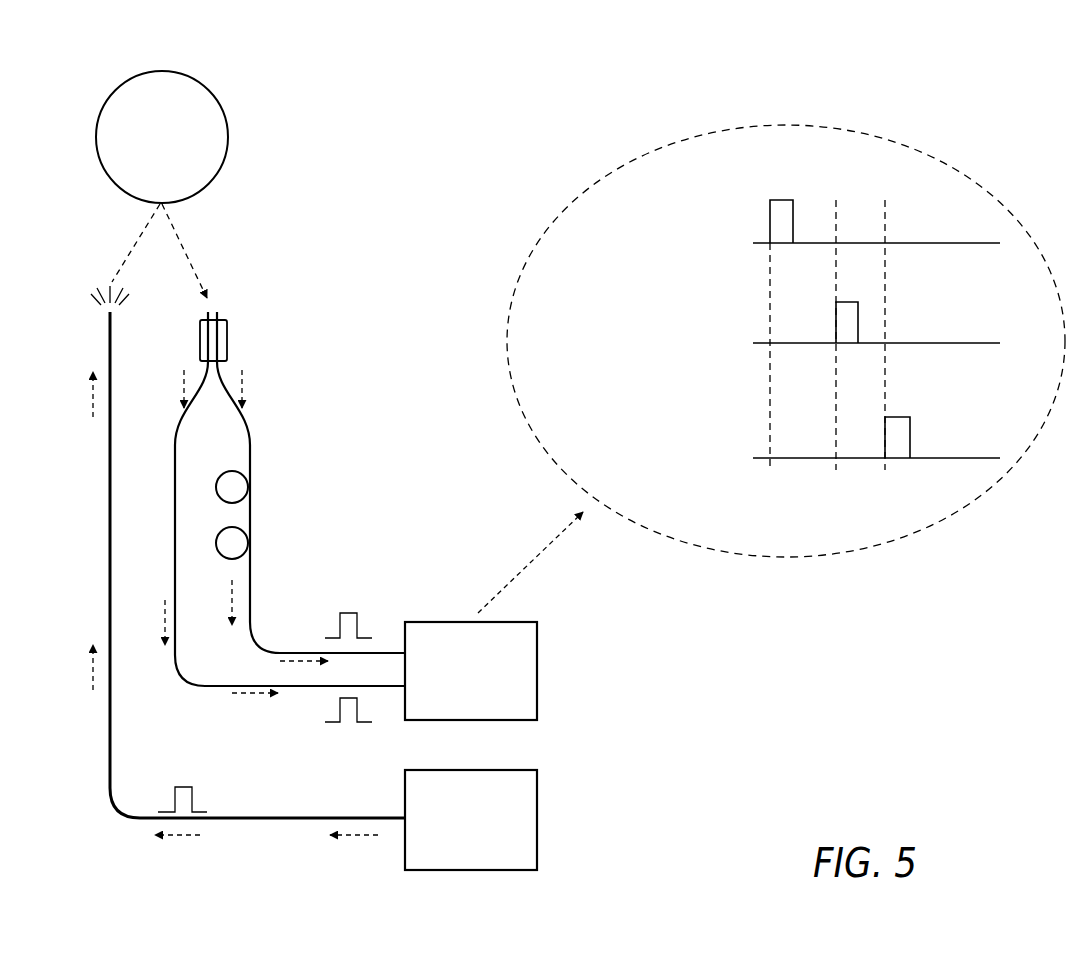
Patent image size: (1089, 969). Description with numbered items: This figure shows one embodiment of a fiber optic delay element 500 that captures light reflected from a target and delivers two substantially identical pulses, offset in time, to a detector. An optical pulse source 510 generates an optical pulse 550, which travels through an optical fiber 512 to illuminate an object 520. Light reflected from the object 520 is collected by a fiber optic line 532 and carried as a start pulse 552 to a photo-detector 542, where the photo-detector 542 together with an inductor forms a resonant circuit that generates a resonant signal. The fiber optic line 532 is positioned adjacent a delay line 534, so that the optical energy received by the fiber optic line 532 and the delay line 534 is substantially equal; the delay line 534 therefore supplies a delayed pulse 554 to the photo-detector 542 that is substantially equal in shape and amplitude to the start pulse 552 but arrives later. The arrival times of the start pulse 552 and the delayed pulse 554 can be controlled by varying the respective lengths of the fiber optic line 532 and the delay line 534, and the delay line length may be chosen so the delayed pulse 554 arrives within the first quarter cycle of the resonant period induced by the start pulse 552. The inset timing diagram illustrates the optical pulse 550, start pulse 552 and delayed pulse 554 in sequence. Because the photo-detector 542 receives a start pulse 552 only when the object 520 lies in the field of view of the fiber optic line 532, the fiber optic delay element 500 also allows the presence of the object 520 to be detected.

The fiber optic delay element 500 is at (423, 156).
The optical pulse source 510 is at (539, 816).
The optical fiber 512 is at (108, 567).
The object 520 is at (97, 130).
The fiber optic line 532 is at (175, 510).
The delay line 534 is at (251, 583).
The photo-detector 542 is at (539, 667).
The optical pulse 550 is at (183, 786).
The start pulse 552 is at (347, 723).
The delayed pulse 554 is at (352, 612).